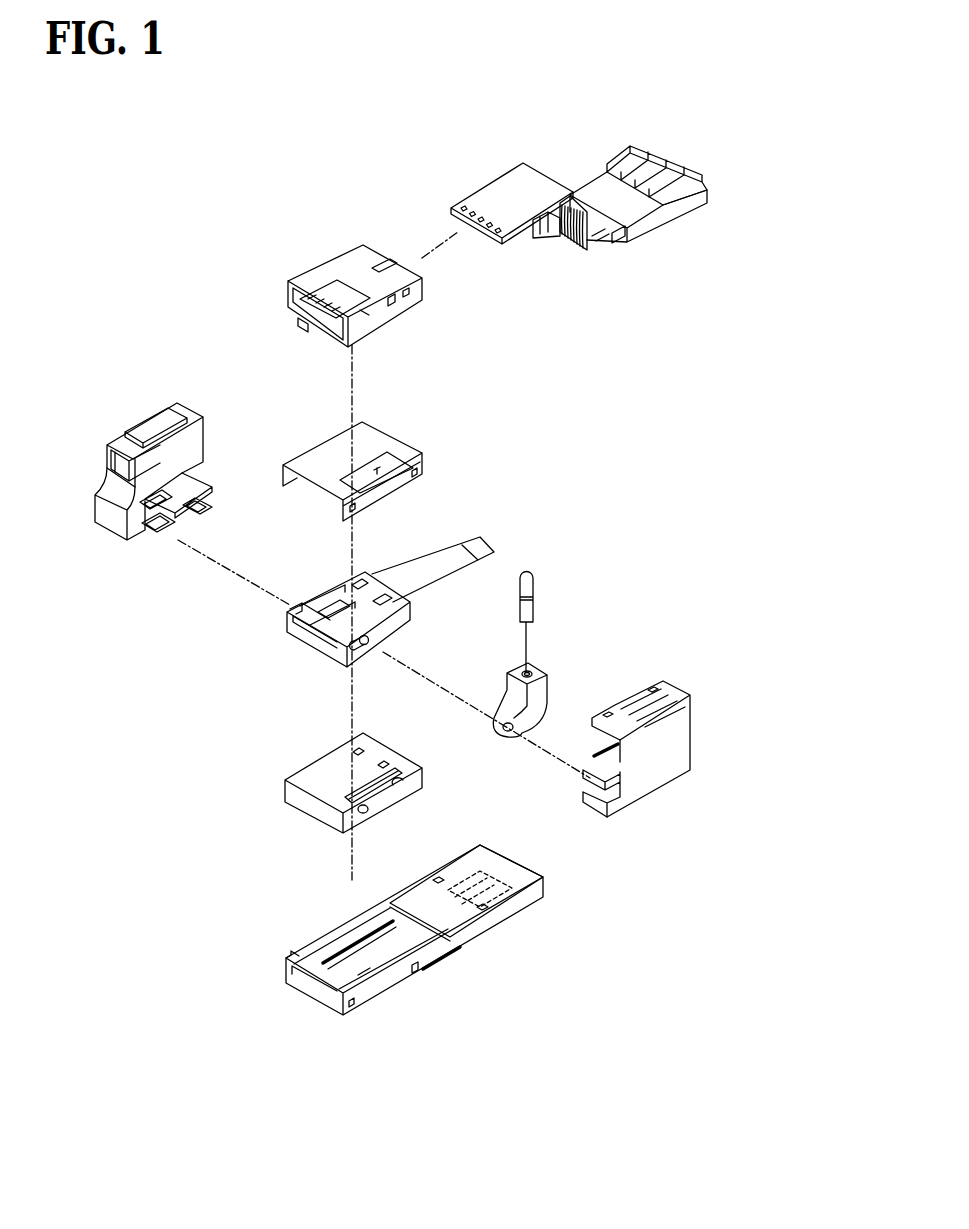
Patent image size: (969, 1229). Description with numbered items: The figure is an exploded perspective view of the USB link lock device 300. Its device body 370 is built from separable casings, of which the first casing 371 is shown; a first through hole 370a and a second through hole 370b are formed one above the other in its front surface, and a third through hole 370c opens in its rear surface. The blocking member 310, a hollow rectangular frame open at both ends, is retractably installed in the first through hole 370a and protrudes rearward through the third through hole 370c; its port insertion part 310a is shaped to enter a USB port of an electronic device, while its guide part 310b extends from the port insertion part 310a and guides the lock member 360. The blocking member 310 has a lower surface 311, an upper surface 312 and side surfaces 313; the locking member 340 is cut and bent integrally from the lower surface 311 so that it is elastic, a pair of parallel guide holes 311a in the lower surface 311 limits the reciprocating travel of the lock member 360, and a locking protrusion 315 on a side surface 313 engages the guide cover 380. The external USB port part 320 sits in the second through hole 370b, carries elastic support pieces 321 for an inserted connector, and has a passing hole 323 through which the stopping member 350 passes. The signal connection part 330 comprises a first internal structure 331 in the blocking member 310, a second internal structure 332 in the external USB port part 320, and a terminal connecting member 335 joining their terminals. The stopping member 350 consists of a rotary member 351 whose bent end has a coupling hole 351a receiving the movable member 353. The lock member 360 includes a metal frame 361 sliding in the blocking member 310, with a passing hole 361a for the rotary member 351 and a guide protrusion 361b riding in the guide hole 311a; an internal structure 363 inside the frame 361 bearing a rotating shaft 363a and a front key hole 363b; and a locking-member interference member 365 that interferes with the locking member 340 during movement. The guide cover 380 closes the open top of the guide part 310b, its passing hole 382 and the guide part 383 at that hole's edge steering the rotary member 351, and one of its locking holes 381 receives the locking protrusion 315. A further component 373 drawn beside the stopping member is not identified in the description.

The USB link lock device 300 is at (240, 194).
The blocking member 310 is at (450, 931).
The port insertion part 310a is at (503, 919).
The guide part 310b is at (406, 969).
The lower surface 311 is at (313, 994).
The guide holes 311a is at (360, 952).
The upper surface 312 is at (497, 862).
The side surfaces 313 is at (313, 948).
The locking protrusion 315 is at (354, 1009).
The external USB port part 320 is at (364, 299).
The elastic support pieces 321 is at (330, 281).
The passing hole 323 is at (318, 341).
The signal connection part 330 is at (579, 226).
The first internal structure 331 is at (610, 255).
The second internal structure 332 is at (499, 186).
The terminal connecting member 335 is at (570, 248).
The locking member 340 is at (477, 920).
The stopping member 350 is at (531, 639).
The rotary member 351 is at (516, 688).
The coupling hole 351a is at (520, 668).
The movable member 353 is at (536, 577).
The lock member 360 is at (263, 640).
The frame 361 is at (383, 792).
The passing hole 361a is at (404, 781).
The guide protrusion 361b is at (368, 808).
The internal structure 363 is at (402, 607).
The rotating shaft 363a is at (362, 645).
The key hole 363b is at (300, 634).
The locking-member interference member 365 is at (492, 547).
The device body 370 is at (161, 462).
The first through hole 370a is at (110, 535).
The second through hole 370b is at (108, 450).
The third through hole 370c is at (213, 480).
The first casing 371 is at (142, 428).
The locking block 373 is at (655, 787).
The guide cover 380 is at (383, 462).
The bracket hole 381 is at (360, 507).
The passing hole 382 is at (380, 468).
The guide part 383 is at (418, 469).